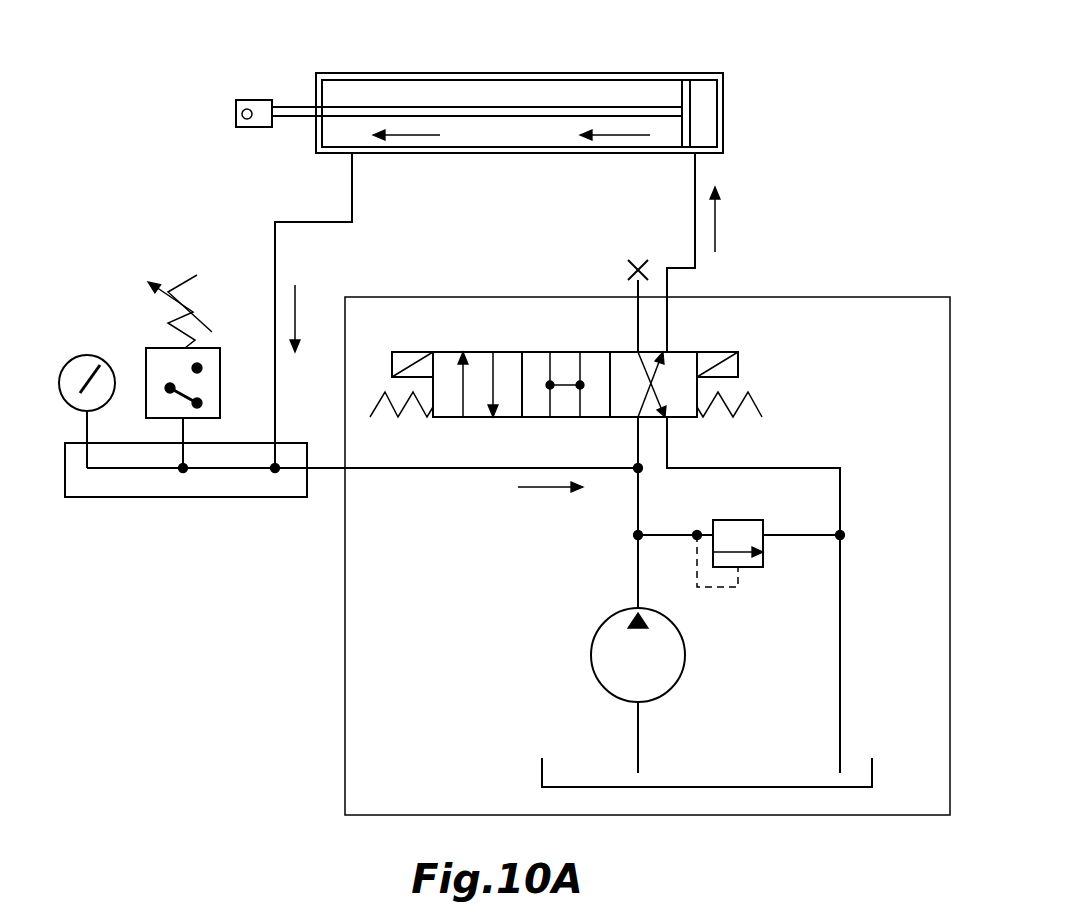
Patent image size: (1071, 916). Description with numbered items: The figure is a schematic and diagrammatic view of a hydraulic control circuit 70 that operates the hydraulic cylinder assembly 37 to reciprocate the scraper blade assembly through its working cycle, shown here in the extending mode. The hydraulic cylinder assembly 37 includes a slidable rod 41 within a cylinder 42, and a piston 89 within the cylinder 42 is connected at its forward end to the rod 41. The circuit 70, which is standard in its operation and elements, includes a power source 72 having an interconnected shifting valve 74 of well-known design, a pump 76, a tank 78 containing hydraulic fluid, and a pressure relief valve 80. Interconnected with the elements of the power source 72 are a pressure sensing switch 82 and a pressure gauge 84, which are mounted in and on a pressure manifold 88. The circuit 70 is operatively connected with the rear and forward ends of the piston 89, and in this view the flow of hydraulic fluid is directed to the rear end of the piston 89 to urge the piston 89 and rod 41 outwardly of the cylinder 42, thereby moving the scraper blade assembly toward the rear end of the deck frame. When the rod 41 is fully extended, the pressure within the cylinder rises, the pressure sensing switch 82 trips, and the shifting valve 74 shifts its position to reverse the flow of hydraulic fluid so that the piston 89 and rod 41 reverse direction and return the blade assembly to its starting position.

The hydraulic cylinder assembly 37 is at (503, 73).
The rod 41 is at (293, 117).
The cylinder 42 is at (413, 73).
The piston 89 is at (680, 98).
The hydraulic control circuit 70 is at (831, 246).
The power source 72 is at (345, 603).
The shifting valve 74 is at (537, 352).
The pump 76 is at (607, 623).
The tank 78 is at (542, 770).
The pressure relief valve 80 is at (763, 545).
The pressure sensing switch 82 is at (215, 348).
The pressure gauge 84 is at (72, 360).
The pressure manifold 88 is at (187, 497).